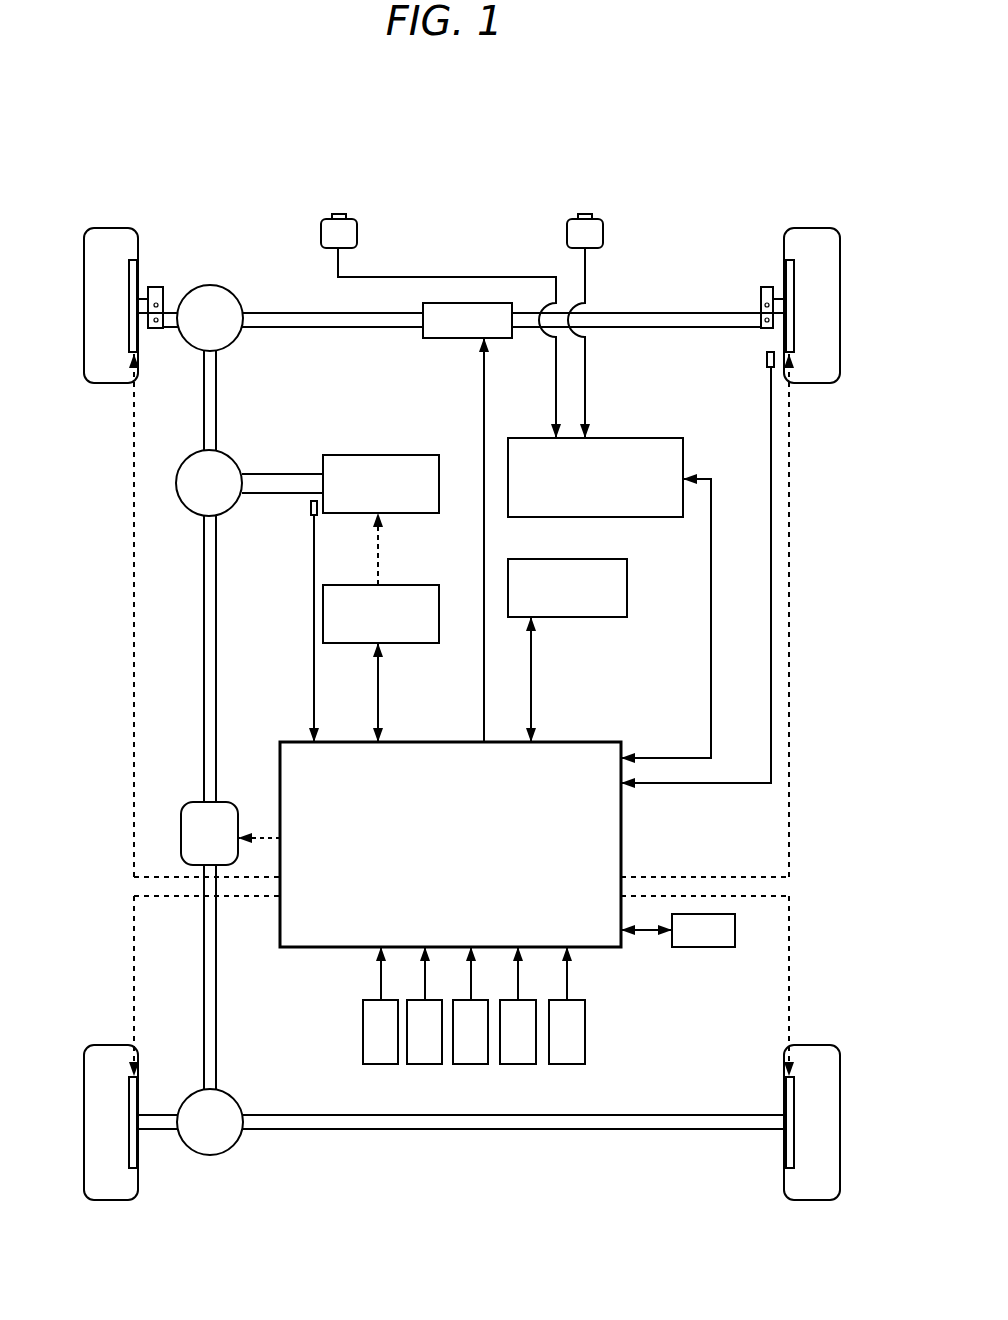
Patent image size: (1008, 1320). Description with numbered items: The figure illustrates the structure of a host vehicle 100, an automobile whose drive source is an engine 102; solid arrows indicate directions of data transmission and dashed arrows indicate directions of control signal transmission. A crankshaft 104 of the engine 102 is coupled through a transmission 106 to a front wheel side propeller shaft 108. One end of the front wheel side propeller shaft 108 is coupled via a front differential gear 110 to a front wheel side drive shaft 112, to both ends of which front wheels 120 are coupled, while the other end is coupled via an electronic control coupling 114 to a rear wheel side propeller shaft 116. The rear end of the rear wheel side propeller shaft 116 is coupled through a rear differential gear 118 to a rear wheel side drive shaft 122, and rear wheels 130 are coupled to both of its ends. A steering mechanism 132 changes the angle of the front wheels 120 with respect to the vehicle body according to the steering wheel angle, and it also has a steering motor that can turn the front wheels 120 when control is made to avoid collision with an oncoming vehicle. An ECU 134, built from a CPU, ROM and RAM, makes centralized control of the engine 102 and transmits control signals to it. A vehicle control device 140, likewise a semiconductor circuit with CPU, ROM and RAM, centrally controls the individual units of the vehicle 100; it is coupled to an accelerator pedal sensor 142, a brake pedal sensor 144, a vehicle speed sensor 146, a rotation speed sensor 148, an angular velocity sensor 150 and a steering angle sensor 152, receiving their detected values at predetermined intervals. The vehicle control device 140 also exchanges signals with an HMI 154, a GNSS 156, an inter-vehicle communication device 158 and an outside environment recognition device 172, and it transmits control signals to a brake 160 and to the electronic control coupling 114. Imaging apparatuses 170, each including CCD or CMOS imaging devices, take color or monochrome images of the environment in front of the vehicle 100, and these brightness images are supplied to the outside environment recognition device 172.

The vehicle 100 is at (226, 128).
The engine 102 is at (430, 455).
The crankshaft 104 is at (283, 474).
The transmission 106 is at (178, 468).
The front wheel side propeller shaft 108 is at (203, 712).
The front differential gear 110 is at (214, 285).
The front wheel side drive shaft 112 is at (697, 313).
The electronic control coupling 114 is at (181, 810).
The rear wheel side propeller shaft 116 is at (203, 1000).
The rear differential gear 118 is at (208, 1155).
The front wheels 120 is at (125, 228).
The rear wheel side drive shaft 122 is at (680, 1130).
The rear wheels 130 is at (112, 1200).
The steering mechanism 132 is at (440, 338).
The ECU 134 is at (430, 585).
The vehicle control device 140 is at (575, 742).
The accelerator pedal sensor 142 is at (380, 1064).
The brake pedal sensor 144 is at (422, 1064).
The vehicle speed sensor 146 is at (470, 1064).
The rotation speed sensor 148 is at (311, 512).
The angular velocity sensor 150 is at (767, 362).
The steering angle sensor 152 is at (516, 1064).
The HMI 154 is at (596, 559).
The GNSS 156 is at (565, 1064).
The inter-vehicle communication device 158 is at (700, 947).
The brake 160 is at (138, 250).
The imaging apparatuses 170 is at (336, 214).
The outside environment recognition device 172 is at (655, 438).